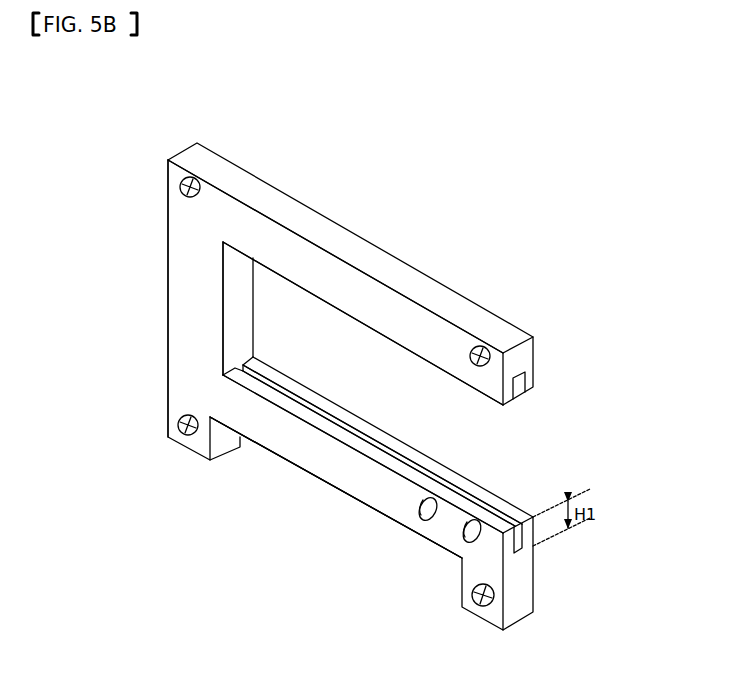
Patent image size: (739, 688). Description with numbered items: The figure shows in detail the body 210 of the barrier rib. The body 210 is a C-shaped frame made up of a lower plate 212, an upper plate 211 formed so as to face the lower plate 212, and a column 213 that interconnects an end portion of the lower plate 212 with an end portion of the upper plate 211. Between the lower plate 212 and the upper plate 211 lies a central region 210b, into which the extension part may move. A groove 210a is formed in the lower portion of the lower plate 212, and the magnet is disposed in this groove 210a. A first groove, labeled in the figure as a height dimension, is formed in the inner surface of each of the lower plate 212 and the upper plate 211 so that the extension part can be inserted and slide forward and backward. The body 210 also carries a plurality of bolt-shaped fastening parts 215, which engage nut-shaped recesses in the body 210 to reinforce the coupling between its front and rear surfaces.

The body 210 is at (364, 370).
The upper plate 211 is at (340, 242).
The lower plate 212 is at (260, 428).
The column 213 is at (181, 296).
The fastening parts 215 is at (479, 345).
The groove 210a is at (307, 480).
The central region 210b is at (399, 406).